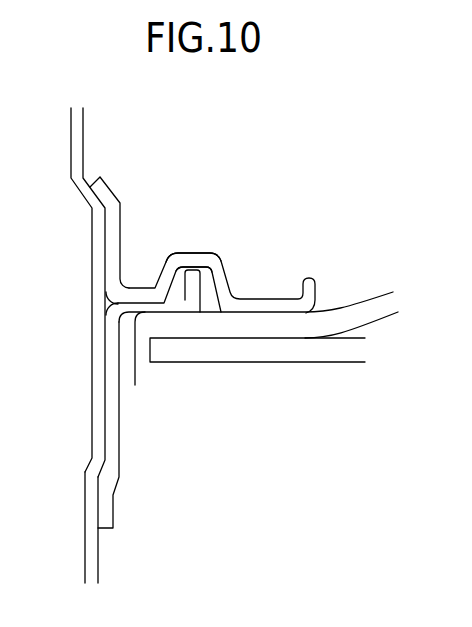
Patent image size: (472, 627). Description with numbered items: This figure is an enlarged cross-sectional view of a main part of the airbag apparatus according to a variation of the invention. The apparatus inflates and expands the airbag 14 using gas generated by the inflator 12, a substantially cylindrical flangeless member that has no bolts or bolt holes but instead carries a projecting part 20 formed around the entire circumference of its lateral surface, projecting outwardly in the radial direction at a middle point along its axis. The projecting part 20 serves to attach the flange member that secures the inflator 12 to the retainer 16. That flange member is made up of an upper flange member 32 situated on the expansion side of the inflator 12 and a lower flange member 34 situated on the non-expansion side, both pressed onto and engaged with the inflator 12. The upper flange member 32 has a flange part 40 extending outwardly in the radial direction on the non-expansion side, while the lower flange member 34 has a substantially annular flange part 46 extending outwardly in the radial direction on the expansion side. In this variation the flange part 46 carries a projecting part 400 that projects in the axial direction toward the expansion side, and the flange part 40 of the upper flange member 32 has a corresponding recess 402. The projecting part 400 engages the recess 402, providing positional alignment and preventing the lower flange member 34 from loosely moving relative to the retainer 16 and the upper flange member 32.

The inflator 12 is at (87, 548).
The airbag 14 is at (343, 305).
The retainer 16 is at (343, 363).
The projecting part 20 is at (97, 407).
The upper flange member 32 is at (113, 248).
The lower flange member 34 is at (112, 357).
The flange part 40 is at (139, 283).
The flange part 46 is at (136, 325).
The projecting part 400 is at (195, 290).
The recess 402 is at (198, 252).